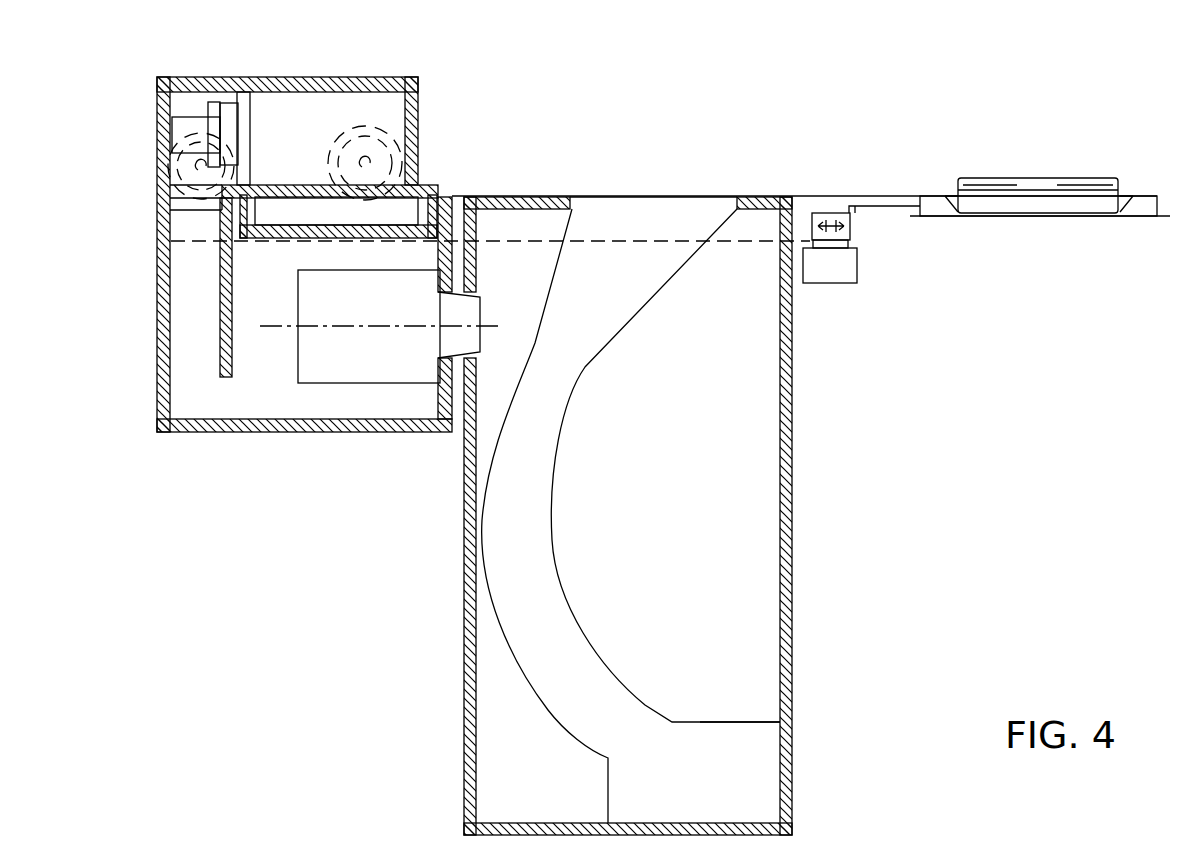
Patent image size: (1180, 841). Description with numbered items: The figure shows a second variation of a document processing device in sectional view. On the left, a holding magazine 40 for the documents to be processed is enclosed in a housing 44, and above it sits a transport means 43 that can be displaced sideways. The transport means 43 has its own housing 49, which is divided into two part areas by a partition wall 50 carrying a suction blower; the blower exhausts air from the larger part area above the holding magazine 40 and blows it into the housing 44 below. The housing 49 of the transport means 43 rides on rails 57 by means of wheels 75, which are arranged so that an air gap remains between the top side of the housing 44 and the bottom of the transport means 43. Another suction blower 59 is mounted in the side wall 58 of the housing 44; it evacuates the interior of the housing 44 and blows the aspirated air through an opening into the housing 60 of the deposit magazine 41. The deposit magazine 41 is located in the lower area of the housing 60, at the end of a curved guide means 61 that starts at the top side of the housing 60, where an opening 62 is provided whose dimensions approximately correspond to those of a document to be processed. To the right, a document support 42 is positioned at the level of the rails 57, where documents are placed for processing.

The holding magazine 40 is at (290, 244).
The deposit magazine 41 is at (767, 780).
The document support 42 is at (1026, 226).
The transport means 43 is at (452, 142).
The housing 44 is at (395, 433).
The housing 49 is at (360, 83).
The partition wall 50 is at (247, 170).
The rails 57 is at (810, 202).
The side wall 58 is at (437, 392).
The suction blower 59 is at (354, 313).
The housing 60 is at (465, 690).
The curved guide means 61 is at (493, 592).
The opening 62 is at (640, 207).
The wheels 75 is at (342, 142).